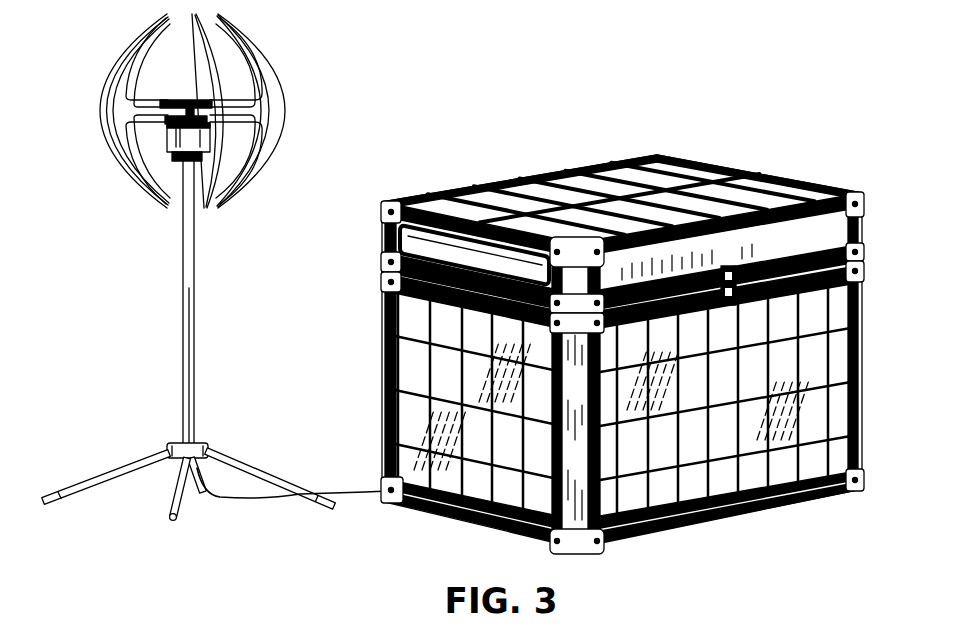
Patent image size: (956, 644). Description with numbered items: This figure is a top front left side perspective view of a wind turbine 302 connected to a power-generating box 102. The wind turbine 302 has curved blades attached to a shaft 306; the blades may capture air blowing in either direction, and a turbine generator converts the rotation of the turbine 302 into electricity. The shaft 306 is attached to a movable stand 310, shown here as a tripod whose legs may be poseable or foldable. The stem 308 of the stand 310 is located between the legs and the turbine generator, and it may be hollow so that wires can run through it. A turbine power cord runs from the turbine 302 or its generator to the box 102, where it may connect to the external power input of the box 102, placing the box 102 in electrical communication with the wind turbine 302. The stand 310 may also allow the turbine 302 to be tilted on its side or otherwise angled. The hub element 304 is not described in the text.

The box 102 is at (766, 104).
The wind turbine 302 is at (258, 40).
The generator hub 304 is at (167, 140).
The shaft 306 is at (192, 119).
The stem 308 is at (194, 303).
The stand 310 is at (112, 467).